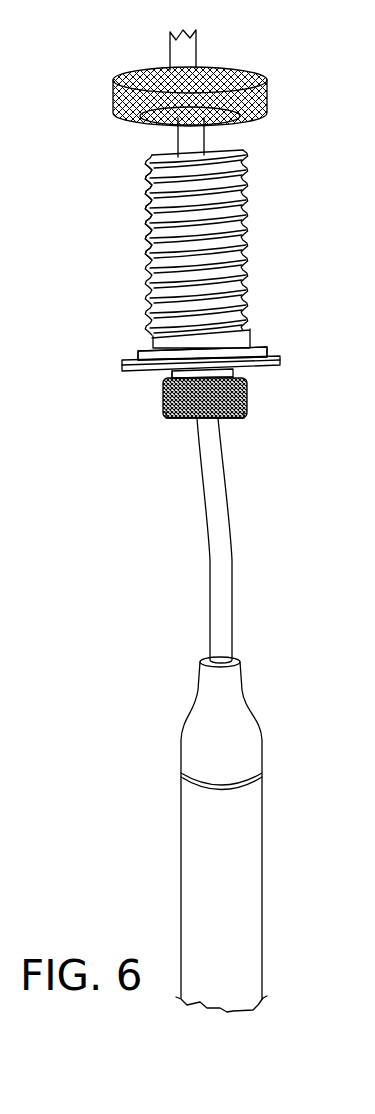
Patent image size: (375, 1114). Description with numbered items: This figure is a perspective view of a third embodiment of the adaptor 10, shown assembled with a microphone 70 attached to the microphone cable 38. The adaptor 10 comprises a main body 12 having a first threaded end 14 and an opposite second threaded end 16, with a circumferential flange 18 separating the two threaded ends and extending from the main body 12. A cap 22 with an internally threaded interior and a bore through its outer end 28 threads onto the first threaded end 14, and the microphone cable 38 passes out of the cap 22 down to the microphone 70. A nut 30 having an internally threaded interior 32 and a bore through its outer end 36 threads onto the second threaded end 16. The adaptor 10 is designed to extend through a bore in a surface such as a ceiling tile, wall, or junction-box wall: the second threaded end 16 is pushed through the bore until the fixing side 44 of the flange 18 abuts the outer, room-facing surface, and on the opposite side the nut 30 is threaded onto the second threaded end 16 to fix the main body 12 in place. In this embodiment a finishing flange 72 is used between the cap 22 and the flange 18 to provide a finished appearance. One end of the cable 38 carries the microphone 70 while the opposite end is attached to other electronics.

The adaptor 10 is at (85, 193).
The main body 12 is at (262, 268).
The first threaded end 14 is at (173, 377).
The second threaded end 16 is at (150, 254).
The circumferential flange 18 is at (140, 355).
The cap 22 is at (247, 398).
The outer end of the cap 28 is at (167, 423).
The nut 30 is at (266, 87).
The internally threaded interior of the nut 32 is at (237, 118).
The outer end of the nut 36 is at (228, 72).
The microphone cable 38 is at (228, 556).
The fixing side 44 is at (260, 347).
The microphone 70 is at (245, 832).
The finishing flange 72 is at (270, 364).